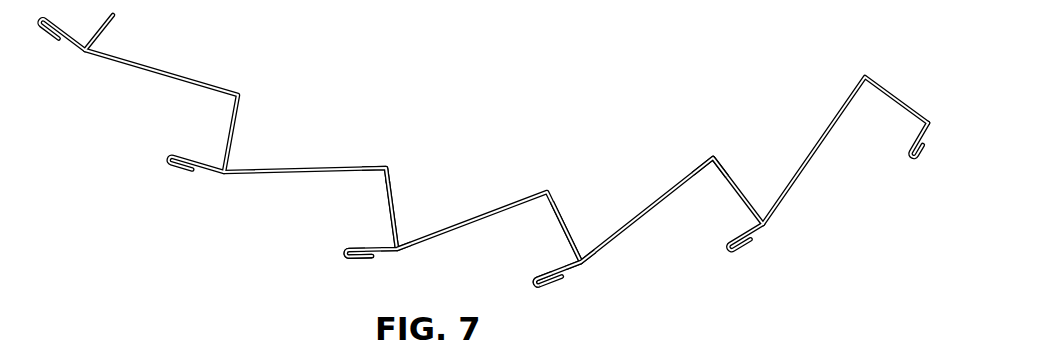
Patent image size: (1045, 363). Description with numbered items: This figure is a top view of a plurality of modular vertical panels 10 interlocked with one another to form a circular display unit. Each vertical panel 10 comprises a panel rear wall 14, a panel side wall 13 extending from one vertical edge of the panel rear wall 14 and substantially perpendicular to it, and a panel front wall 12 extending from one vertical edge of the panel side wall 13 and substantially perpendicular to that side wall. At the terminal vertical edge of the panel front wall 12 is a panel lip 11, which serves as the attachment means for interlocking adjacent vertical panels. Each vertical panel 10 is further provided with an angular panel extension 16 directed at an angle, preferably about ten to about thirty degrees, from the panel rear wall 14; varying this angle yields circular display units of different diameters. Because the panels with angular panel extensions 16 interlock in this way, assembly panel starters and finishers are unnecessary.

The modular vertical panel 10 is at (304, 166).
The panel lip 11 is at (356, 263).
The panel front wall 12 is at (370, 250).
The panel side wall 13 is at (396, 208).
The panel rear wall 14 is at (356, 168).
The angular panel extension 16 is at (391, 259).